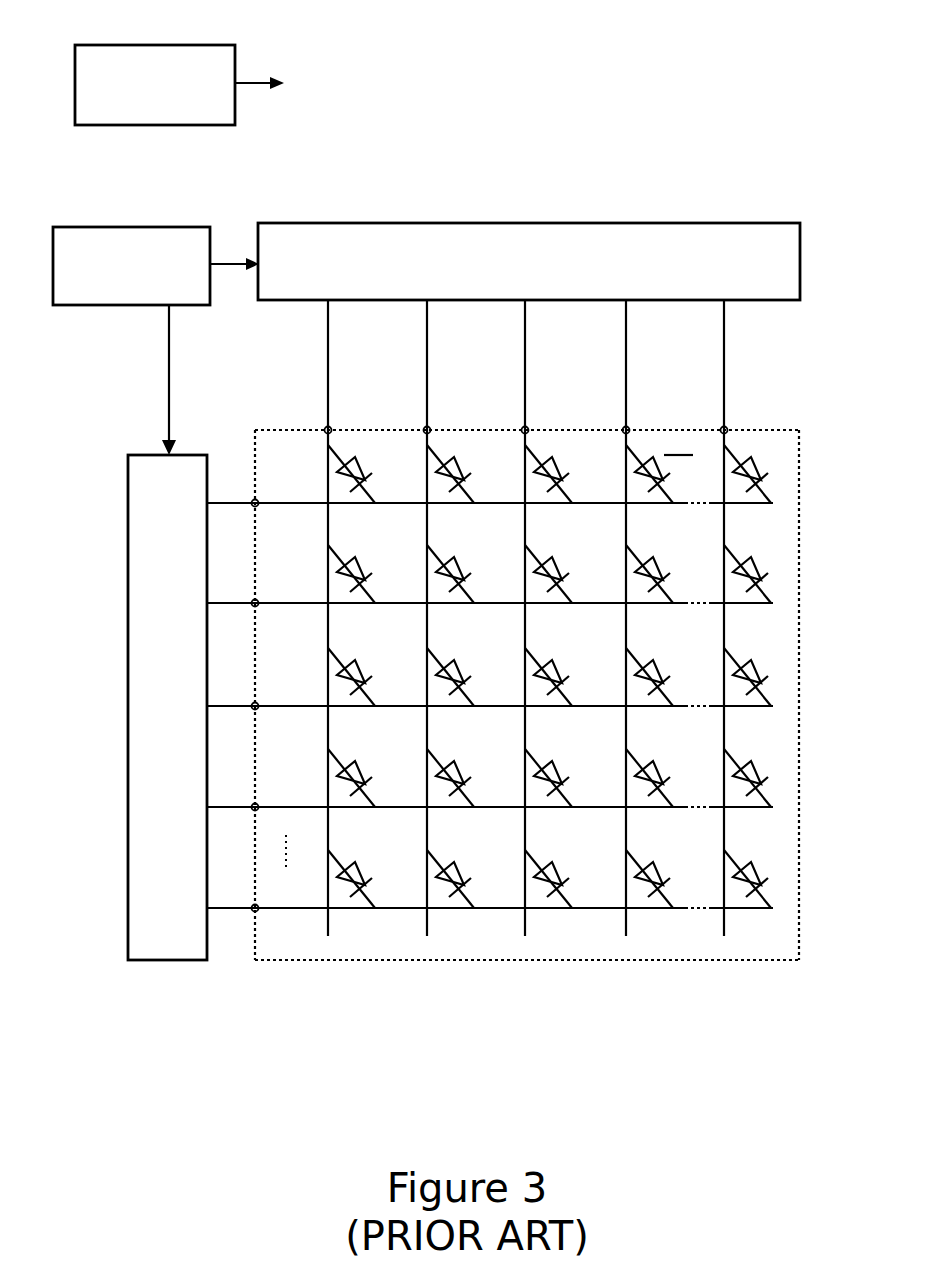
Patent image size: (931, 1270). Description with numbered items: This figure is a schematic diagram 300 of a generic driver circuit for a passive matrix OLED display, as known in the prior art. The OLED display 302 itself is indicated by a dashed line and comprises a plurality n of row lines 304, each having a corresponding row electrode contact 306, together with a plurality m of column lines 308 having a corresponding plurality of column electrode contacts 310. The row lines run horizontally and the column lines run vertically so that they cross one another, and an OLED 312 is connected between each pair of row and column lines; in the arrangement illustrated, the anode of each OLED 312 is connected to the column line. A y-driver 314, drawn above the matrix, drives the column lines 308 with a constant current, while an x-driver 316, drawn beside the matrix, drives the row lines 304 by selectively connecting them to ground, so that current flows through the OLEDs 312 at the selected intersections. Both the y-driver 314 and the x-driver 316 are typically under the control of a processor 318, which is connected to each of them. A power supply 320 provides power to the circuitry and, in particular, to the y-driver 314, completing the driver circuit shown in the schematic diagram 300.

The schematic diagram 300 is at (133, 1190).
The OLED display 302 is at (525, 657).
The row lines 304 is at (740, 505).
The row electrode contact 306 is at (254, 500).
The column lines 308 is at (326, 928).
The column electrode contacts 310 is at (324, 428).
The OLED 312 is at (770, 458).
The y-driver 314 is at (633, 223).
The x-driver 316 is at (128, 640).
The processor 318 is at (152, 227).
The power supply 320 is at (131, 45).